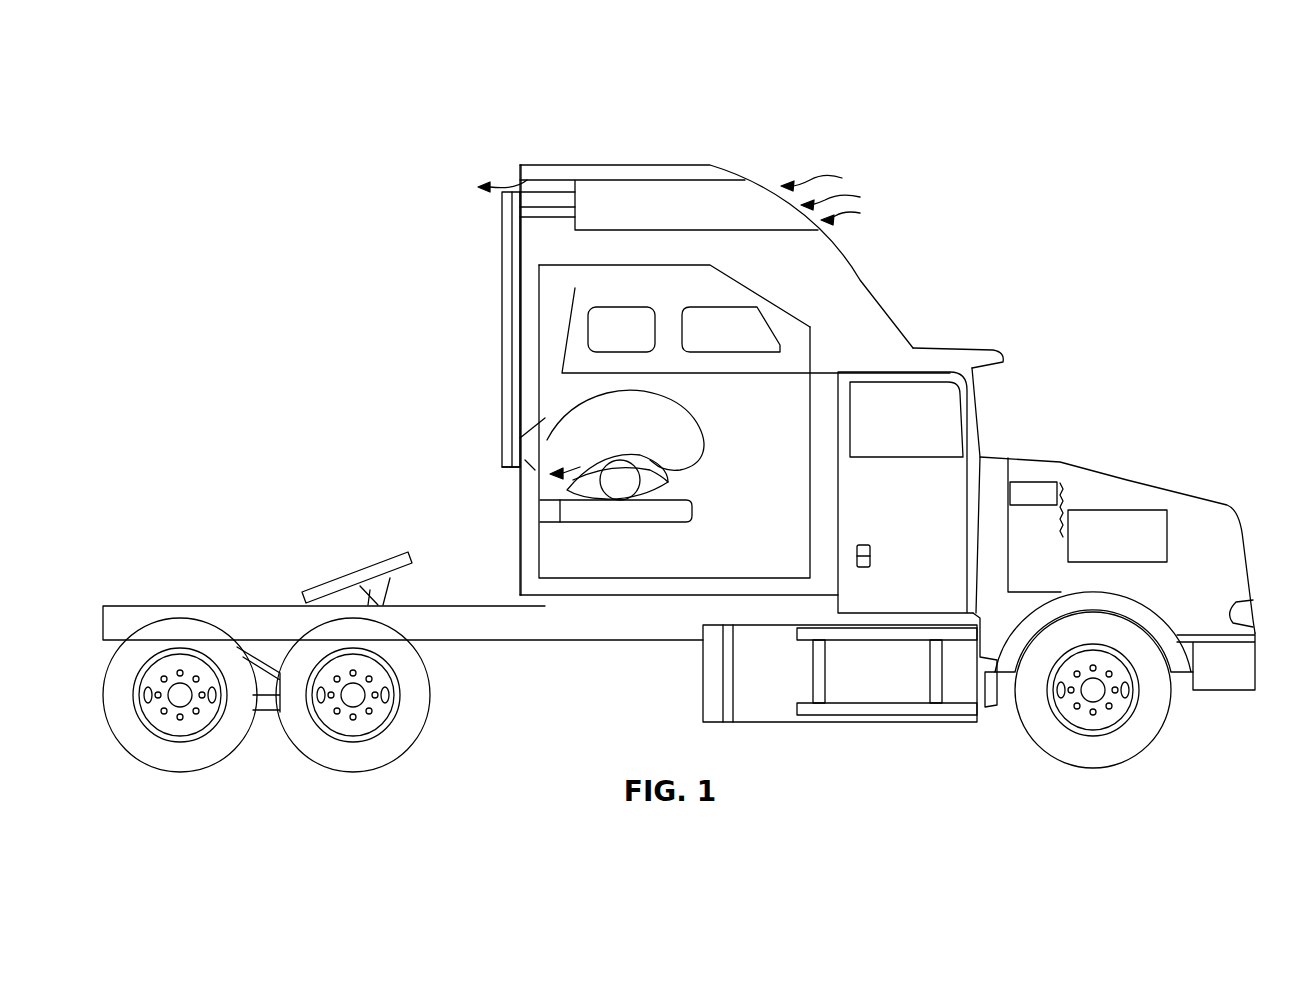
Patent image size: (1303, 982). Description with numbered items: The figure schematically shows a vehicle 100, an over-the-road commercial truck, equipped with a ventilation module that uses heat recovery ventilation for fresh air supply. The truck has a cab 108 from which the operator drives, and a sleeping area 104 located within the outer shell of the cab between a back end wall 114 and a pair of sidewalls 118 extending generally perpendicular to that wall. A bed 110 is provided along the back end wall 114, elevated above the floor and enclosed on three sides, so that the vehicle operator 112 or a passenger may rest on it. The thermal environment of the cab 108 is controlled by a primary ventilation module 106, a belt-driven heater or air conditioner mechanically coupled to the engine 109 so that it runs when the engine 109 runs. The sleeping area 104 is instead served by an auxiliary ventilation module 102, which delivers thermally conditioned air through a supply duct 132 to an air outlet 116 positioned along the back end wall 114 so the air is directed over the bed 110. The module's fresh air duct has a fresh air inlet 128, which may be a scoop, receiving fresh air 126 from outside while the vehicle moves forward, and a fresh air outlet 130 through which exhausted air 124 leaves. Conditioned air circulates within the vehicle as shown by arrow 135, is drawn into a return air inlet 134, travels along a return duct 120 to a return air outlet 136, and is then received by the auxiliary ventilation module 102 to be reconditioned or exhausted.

The vehicle 100 is at (1144, 120).
The auxiliary ventilation module 102 is at (656, 216).
The sleeping area 104 is at (734, 486).
The primary ventilation module 106 is at (1020, 490).
The cab 108 is at (875, 403).
The engine 109 is at (1102, 544).
The bed 110 is at (608, 513).
The vehicle operator 112 is at (653, 487).
The back end wall 114 is at (520, 537).
The air outlet 116 is at (533, 447).
The sidewalls 118 is at (660, 299).
The return duct 120 is at (500, 287).
The exhausted air 124 is at (480, 184).
The fresh air 126 is at (840, 200).
The fresh air inlet 128 is at (760, 198).
The fresh air outlet 130 is at (522, 178).
The supply duct 132 is at (503, 343).
The return air inlet 134 is at (535, 478).
The arrow 135 is at (577, 410).
The return air outlet 136 is at (537, 197).